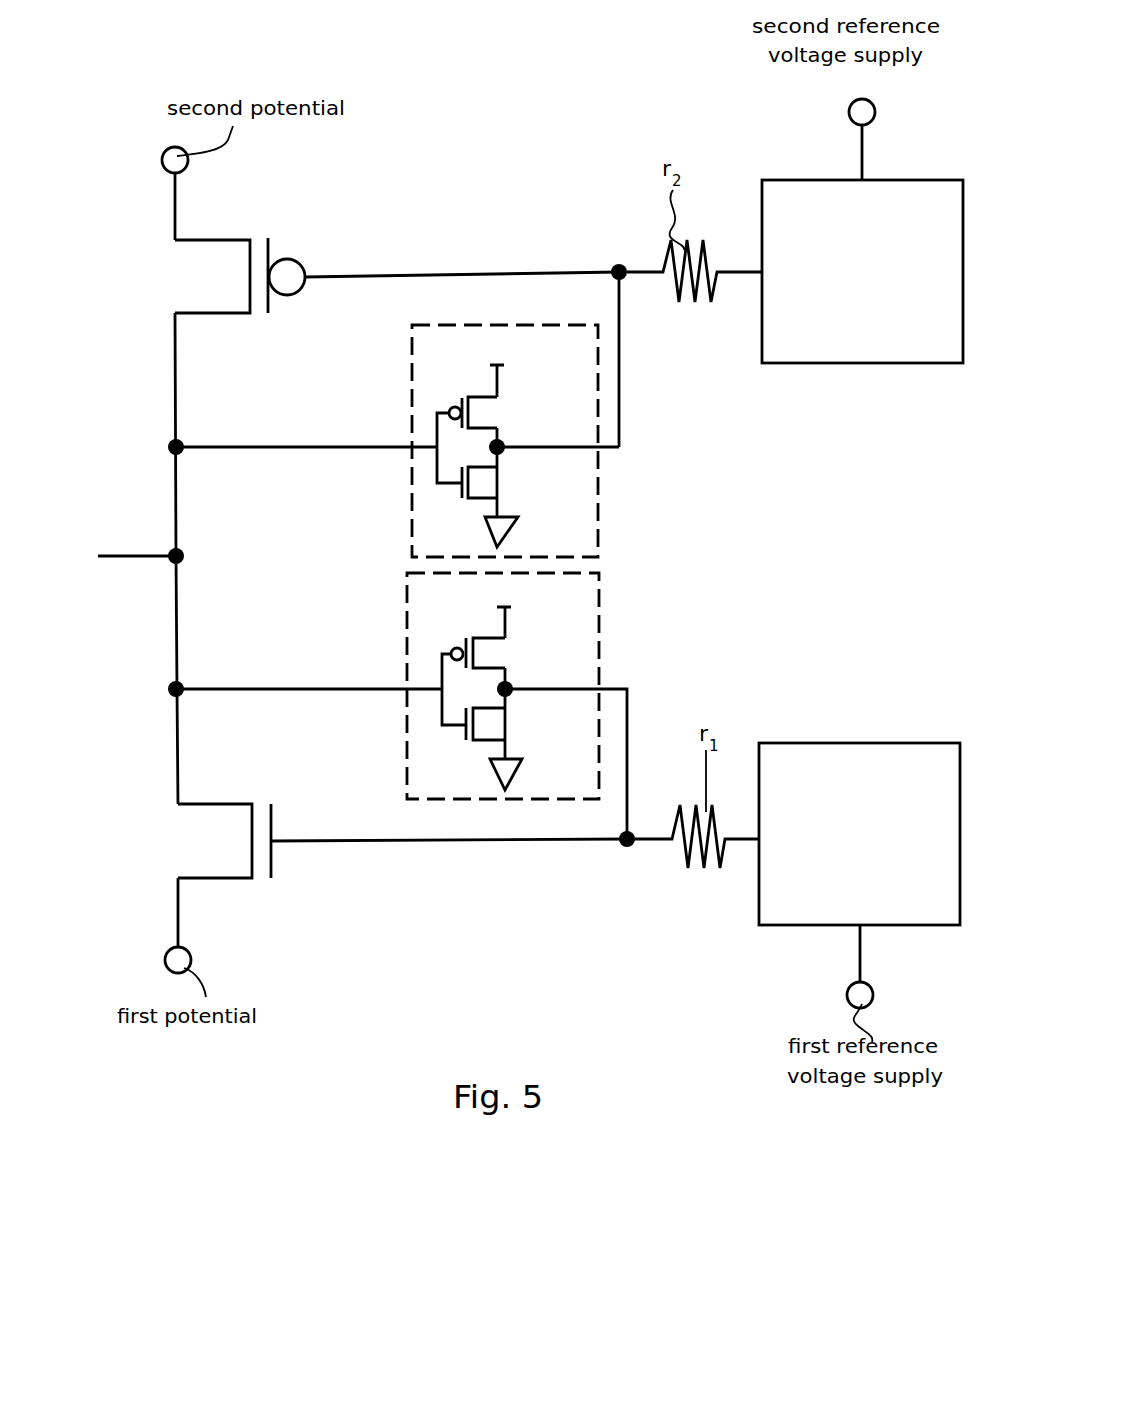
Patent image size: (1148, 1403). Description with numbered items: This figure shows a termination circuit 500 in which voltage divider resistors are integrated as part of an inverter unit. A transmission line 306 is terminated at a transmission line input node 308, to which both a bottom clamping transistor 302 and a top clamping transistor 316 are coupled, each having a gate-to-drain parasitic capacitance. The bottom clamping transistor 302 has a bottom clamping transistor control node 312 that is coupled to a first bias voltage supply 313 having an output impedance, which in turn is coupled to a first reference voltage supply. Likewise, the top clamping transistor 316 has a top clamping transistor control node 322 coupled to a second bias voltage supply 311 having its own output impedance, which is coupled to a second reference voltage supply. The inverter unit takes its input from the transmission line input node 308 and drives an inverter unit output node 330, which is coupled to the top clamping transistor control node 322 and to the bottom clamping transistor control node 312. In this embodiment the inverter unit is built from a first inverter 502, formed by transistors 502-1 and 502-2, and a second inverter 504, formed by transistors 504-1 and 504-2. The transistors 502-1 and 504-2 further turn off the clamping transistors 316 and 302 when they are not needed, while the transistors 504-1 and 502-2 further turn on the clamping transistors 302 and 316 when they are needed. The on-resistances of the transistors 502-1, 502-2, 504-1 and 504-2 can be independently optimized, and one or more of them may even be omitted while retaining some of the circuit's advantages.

The termination circuit 500 is at (345, 1093).
The bottom clamping transistor 302 is at (252, 842).
The transmission line 306 is at (101, 559).
The transmission line input node 308 is at (186, 560).
The second bias voltage supply 311 is at (862, 271).
The bottom clamping transistor control node 312 is at (634, 846).
The first bias voltage supply 313 is at (859, 834).
The top clamping transistor 316 is at (250, 268).
The top clamping transistor control node 322 is at (615, 262).
The inverter unit output node 330 is at (272, 238).
The first inverter 502 is at (475, 427).
The transistor 502-1 is at (484, 397).
The transistor 502-2 is at (484, 467).
The second inverter 504 is at (467, 686).
The transistor 504-1 is at (492, 638).
The transistor 504-2 is at (492, 708).